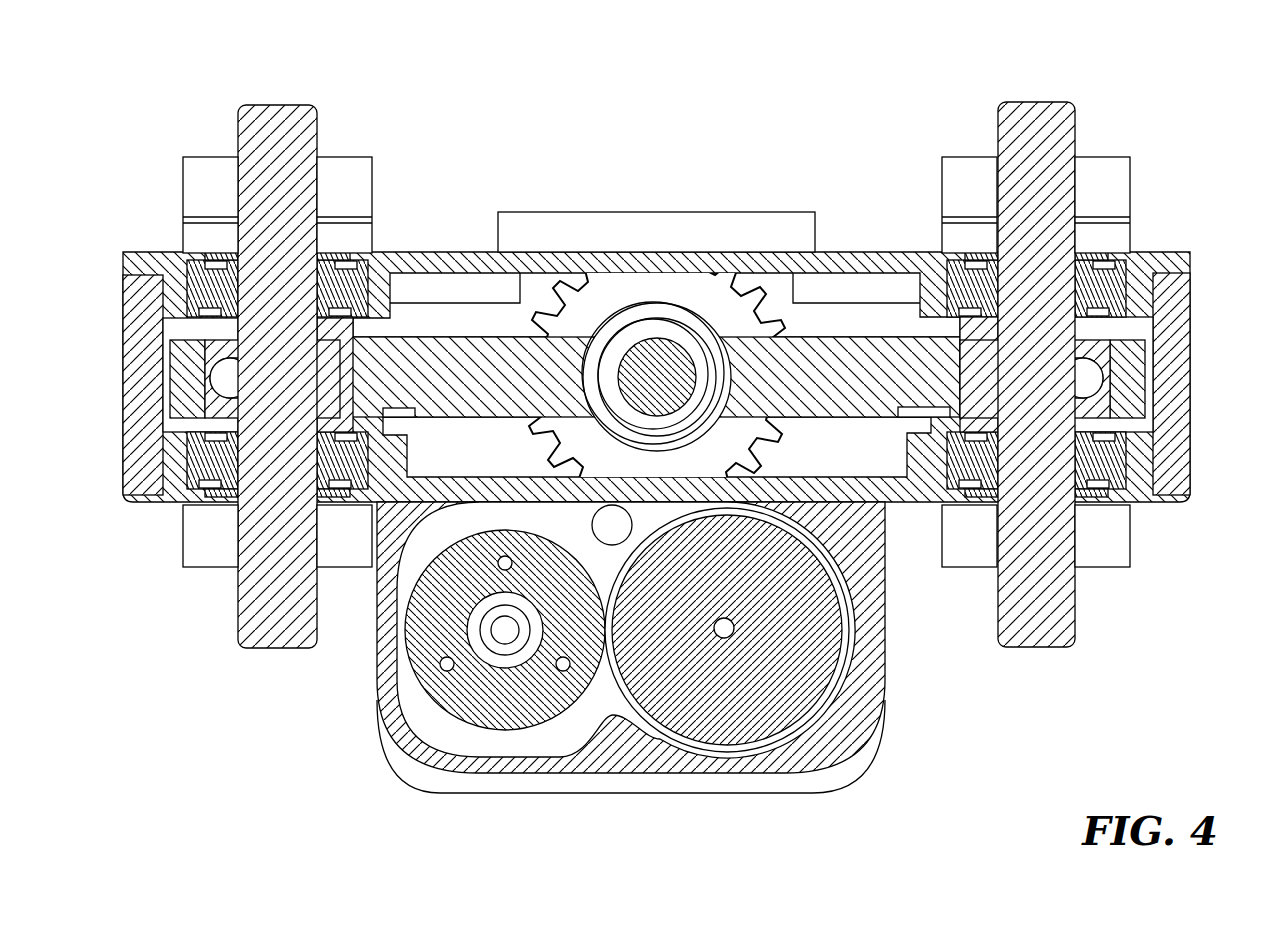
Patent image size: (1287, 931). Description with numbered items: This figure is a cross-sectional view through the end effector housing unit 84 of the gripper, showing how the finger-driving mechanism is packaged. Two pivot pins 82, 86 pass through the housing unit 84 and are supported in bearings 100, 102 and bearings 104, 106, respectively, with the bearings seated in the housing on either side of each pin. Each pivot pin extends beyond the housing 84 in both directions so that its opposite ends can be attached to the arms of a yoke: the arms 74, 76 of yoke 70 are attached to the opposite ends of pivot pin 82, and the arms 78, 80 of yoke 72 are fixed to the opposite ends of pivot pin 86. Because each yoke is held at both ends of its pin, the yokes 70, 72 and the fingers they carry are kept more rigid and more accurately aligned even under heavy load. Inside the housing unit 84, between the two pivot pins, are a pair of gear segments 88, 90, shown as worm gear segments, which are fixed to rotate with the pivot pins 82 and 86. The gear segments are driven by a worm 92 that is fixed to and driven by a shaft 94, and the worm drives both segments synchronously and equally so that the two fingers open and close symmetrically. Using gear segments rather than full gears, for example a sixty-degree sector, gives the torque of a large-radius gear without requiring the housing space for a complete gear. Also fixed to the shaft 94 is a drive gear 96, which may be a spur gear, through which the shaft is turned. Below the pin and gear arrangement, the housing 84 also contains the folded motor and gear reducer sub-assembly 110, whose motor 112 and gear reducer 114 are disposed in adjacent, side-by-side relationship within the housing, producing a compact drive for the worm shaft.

The yoke 70 is at (222, 341).
The yoke 72 is at (1101, 343).
The arm 74 is at (210, 157).
The arm 76 is at (200, 548).
The arm 78 is at (1112, 183).
The arm 80 is at (1100, 558).
The pivot pin 82 is at (278, 103).
The end effector housing unit 84 is at (1205, 407).
The pivot pin 86 is at (1033, 102).
The gear segment 88 is at (445, 370).
The gear segment 90 is at (850, 360).
The worm 92 is at (625, 318).
The shaft 94 is at (665, 376).
The drive gear 96 is at (723, 300).
The bearing 100 is at (205, 290).
The bearing 102 is at (203, 470).
The bearing 104 is at (1105, 293).
The bearing 106 is at (1105, 465).
The folded motor and gear reducer sub-assembly 110 is at (690, 672).
The motor 112 is at (460, 688).
The gear reducer 114 is at (815, 650).